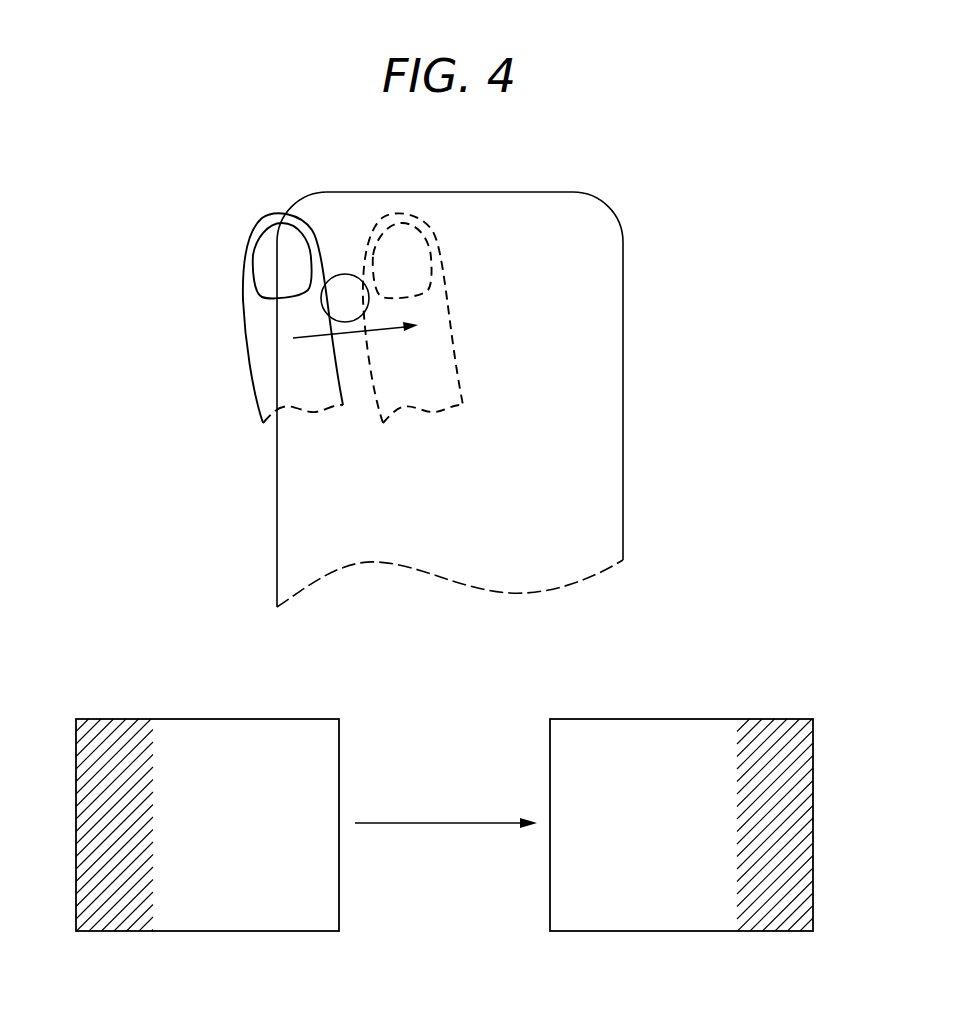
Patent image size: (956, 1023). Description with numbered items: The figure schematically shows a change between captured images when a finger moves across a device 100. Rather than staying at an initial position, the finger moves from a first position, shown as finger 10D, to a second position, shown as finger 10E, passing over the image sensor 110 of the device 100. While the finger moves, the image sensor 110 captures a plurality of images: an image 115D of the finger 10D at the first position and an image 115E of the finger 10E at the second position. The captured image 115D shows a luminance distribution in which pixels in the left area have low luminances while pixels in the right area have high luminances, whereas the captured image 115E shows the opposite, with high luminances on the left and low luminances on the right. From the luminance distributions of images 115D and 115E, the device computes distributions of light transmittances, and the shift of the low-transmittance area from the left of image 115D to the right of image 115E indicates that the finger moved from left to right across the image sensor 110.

The device 100 is at (623, 320).
The finger at first position 10D is at (273, 211).
The finger at second position 10E is at (394, 212).
The image sensor 110 is at (343, 273).
The image of finger at first position 115D is at (201, 932).
The image of finger at second position 115E is at (680, 932).